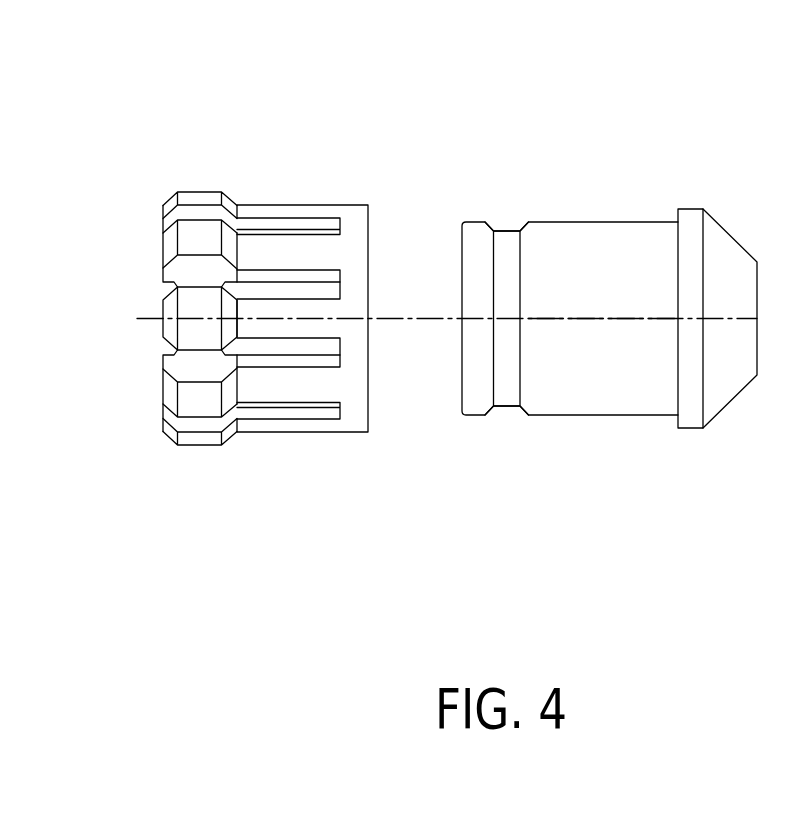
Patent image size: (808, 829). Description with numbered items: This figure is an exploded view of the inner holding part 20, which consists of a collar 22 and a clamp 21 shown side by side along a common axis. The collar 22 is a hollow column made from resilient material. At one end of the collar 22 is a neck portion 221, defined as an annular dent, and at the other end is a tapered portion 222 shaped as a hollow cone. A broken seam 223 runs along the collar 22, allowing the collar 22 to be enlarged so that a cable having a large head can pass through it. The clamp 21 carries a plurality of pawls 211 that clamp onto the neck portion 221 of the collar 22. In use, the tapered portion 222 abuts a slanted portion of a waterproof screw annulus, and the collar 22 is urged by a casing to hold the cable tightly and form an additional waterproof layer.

The inner holding part 20 is at (457, 299).
The clamp 21 is at (265, 243).
The pawls 211 is at (200, 200).
The collar 22 is at (620, 227).
The neck portion 221 is at (503, 238).
The tapered portion 222 is at (735, 260).
The broken seam 223 is at (593, 318).